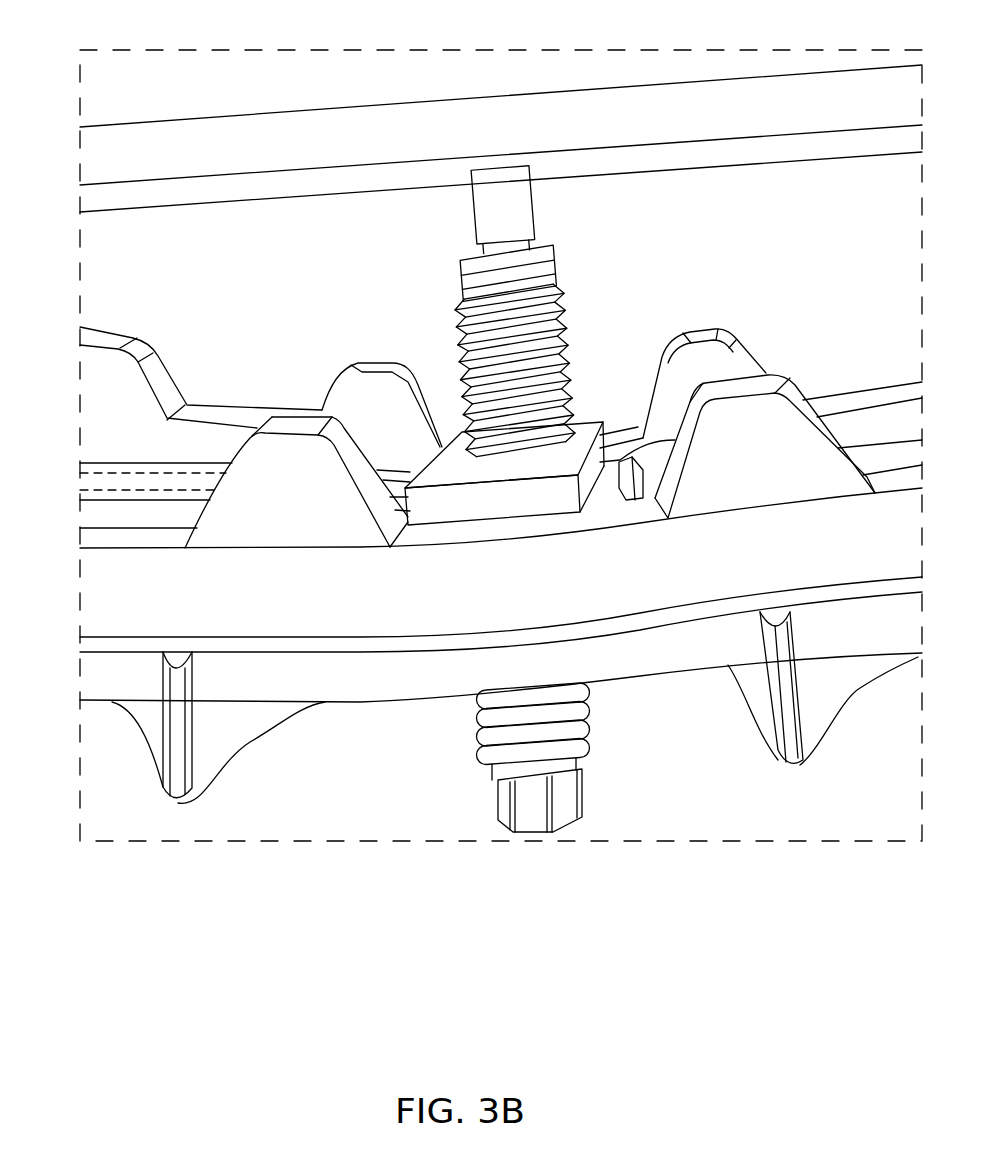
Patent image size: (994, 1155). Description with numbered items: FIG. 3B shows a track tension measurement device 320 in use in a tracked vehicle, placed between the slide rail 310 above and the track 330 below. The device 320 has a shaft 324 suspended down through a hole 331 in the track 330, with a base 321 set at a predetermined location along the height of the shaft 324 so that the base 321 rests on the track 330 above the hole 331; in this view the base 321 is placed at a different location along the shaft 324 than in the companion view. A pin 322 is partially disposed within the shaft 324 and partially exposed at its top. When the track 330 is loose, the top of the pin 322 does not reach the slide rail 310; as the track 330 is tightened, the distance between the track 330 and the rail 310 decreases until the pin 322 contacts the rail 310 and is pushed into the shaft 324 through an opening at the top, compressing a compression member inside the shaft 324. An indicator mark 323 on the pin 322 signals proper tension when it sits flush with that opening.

The slide rail 310 is at (293, 158).
The track tension measurement device 320 is at (505, 416).
The base 321 is at (533, 505).
The pin 322 is at (497, 200).
The indicator mark 323 is at (540, 237).
The shaft 324 is at (590, 807).
The track 330 is at (362, 602).
The hole 331 is at (634, 490).